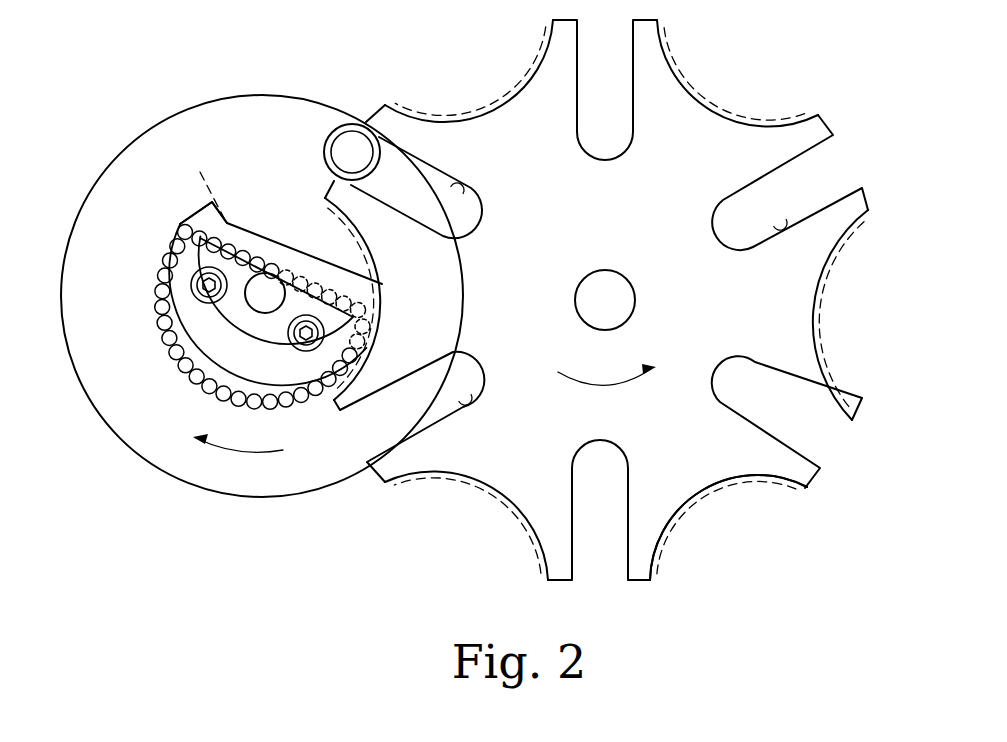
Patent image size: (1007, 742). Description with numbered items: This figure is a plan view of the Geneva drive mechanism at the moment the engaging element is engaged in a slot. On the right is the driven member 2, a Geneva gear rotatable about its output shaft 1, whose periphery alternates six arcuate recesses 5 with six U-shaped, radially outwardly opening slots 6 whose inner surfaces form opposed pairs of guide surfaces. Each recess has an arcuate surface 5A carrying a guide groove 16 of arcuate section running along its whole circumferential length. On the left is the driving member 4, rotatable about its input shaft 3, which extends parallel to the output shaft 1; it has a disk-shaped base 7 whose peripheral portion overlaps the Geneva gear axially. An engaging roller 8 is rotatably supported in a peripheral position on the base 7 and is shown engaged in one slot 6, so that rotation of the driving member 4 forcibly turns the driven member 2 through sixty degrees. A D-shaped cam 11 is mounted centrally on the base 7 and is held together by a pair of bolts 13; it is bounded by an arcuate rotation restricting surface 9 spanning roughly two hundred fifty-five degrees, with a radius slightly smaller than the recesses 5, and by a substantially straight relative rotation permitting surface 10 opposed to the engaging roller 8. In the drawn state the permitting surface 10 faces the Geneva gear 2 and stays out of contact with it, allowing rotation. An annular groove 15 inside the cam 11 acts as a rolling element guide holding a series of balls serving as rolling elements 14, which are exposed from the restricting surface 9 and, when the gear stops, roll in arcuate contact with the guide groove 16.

The output shaft 1 is at (626, 293).
The driven member 2 is at (501, 96).
The input shaft 3 is at (265, 293).
The driving member 4 is at (140, 134).
The arcuate recesses 5 is at (348, 229).
The arcuate surface 5A is at (728, 527).
The slots 6 is at (462, 191).
The disk-shaped base 7 is at (148, 428).
The engaging roller 8 is at (338, 125).
The rotation restricting surface 9 is at (306, 398).
The relative rotation permitting surface 10 is at (261, 236).
The cam 11 is at (180, 216).
The bolts 13 is at (208, 290).
The rolling elements 14 is at (157, 327).
The annular groove 15 is at (196, 186).
The guide groove 16 is at (770, 128).